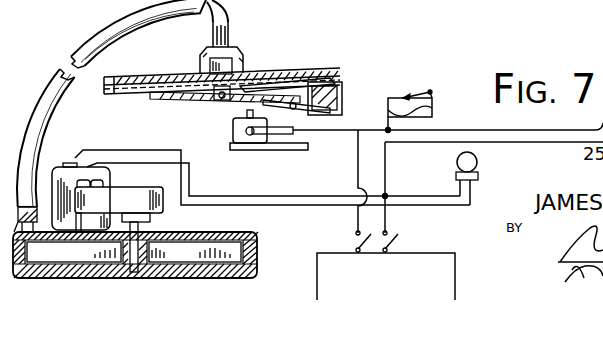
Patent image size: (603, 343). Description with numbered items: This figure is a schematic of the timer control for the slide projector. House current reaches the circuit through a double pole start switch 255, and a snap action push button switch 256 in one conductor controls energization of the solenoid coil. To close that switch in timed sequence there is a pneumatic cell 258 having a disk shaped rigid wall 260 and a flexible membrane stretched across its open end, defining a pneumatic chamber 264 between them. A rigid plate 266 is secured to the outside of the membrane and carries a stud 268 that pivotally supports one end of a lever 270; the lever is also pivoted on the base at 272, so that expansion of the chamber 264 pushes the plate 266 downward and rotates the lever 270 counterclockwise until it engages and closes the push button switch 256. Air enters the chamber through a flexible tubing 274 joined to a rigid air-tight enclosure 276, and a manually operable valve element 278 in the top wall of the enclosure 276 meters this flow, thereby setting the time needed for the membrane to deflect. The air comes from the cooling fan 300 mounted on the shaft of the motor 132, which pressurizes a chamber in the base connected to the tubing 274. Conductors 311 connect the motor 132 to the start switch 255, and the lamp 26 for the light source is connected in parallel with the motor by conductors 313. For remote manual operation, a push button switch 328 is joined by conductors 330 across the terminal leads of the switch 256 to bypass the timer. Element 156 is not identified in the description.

The flexible tubing 274 is at (84, 45).
The valve element 278 is at (226, 40).
The enclosure 276 is at (236, 58).
The pneumatic chamber 264 is at (228, 72).
The pneumatic cell 258 is at (302, 63).
The rigid wall 260 is at (308, 72).
The lever pivot 272 is at (342, 95).
The rigid plate 266 is at (157, 94).
The stud 268 is at (214, 97).
The lever 270 is at (270, 106).
The push button switch 256 is at (233, 132).
The push button switch 328 is at (419, 97).
The conductors 330 is at (420, 113).
The lamp 26 is at (478, 162).
The conductors 311 is at (226, 204).
The conductors 313 is at (437, 188).
The start switch 255 is at (392, 241).
The motor 132 is at (163, 208).
The fan 300 is at (244, 238).
The conduit 156 is at (447, 2).